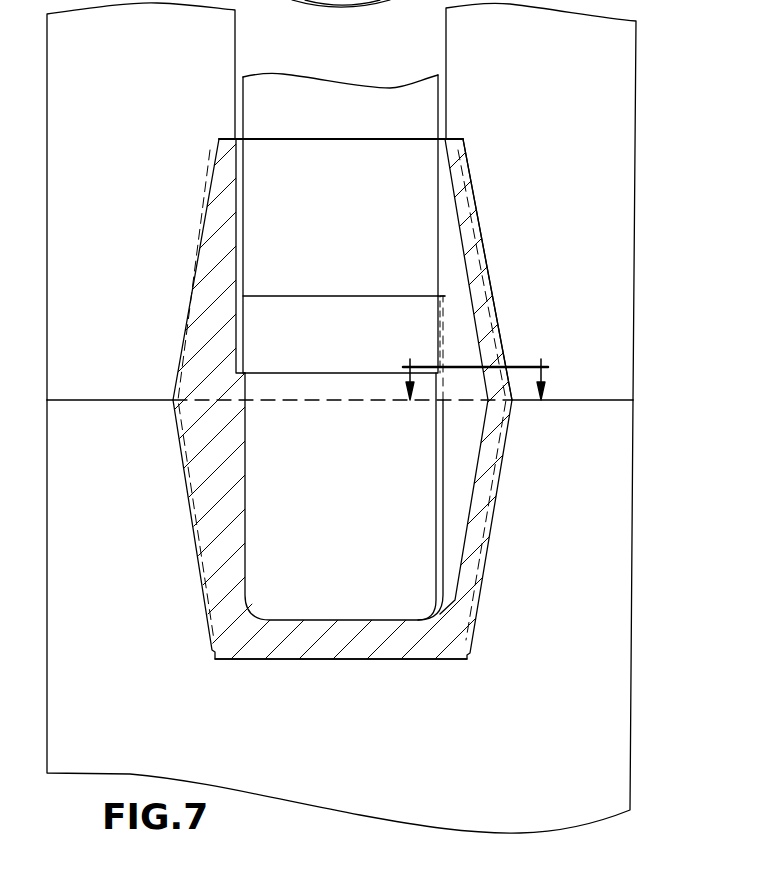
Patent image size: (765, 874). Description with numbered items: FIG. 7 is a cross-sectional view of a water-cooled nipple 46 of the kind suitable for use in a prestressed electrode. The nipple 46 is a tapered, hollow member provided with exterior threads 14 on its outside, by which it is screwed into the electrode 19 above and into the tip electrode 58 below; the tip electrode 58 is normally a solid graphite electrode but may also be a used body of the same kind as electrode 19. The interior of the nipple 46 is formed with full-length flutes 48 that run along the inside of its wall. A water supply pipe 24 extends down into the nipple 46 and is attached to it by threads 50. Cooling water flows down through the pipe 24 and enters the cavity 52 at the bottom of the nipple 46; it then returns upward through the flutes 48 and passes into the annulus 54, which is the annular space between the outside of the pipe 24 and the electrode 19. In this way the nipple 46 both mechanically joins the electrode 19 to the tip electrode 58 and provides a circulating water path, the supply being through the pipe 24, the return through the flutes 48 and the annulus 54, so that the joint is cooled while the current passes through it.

The exterior threads 14 is at (475, 313).
The electrode 19 is at (617, 149).
The water supply pipe 24 is at (438, 125).
The nipple 46 is at (495, 480).
The full-length flutes 48 is at (450, 460).
The threads 50 is at (443, 337).
The cavity 52 is at (393, 590).
The annulus 54 is at (244, 126).
The tip electrode 58 is at (613, 587).